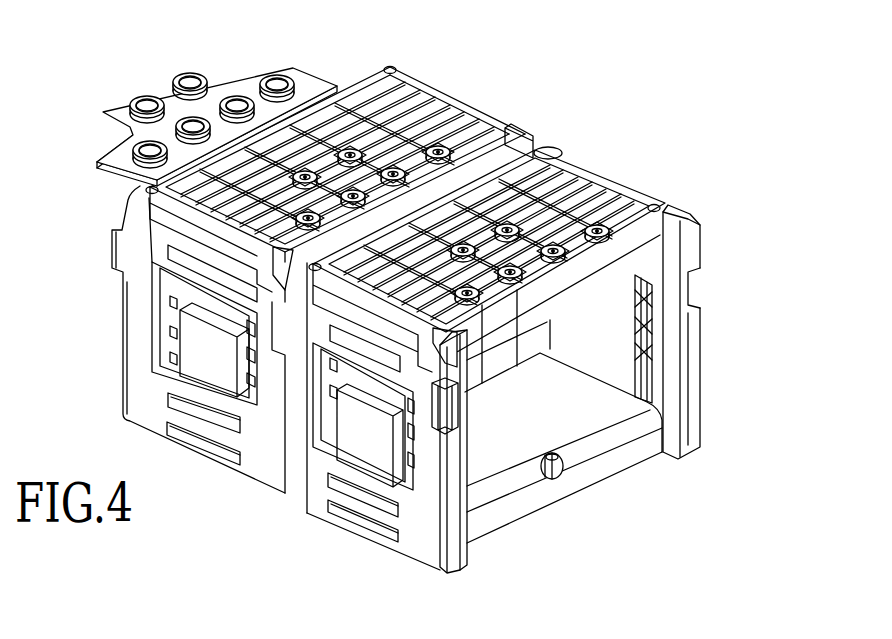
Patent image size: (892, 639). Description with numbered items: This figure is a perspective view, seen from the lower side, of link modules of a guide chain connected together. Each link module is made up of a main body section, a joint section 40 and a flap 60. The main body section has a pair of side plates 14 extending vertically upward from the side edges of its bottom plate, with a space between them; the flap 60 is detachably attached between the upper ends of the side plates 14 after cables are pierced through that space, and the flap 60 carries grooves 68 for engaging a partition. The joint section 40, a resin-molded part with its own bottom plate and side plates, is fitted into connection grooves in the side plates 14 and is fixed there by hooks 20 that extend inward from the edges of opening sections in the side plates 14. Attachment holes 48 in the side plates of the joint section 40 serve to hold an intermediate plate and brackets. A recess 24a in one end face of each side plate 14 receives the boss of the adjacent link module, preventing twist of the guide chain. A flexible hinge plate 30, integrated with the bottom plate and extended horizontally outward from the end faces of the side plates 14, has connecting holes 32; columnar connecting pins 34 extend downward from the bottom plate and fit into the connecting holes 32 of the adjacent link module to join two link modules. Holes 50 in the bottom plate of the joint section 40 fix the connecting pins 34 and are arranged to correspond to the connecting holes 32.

The side plates 14 is at (692, 400).
The hooks 20 is at (200, 346).
The recess 24a is at (692, 288).
The flexible hinge plate 30 is at (222, 95).
The connecting holes 32 is at (148, 99).
The connecting pins 34 is at (348, 140).
The joint section 40 is at (423, 120).
The attachment holes 48 is at (340, 390).
The holes 50 is at (477, 112).
The flap 60 is at (600, 470).
The grooves 68 is at (553, 470).